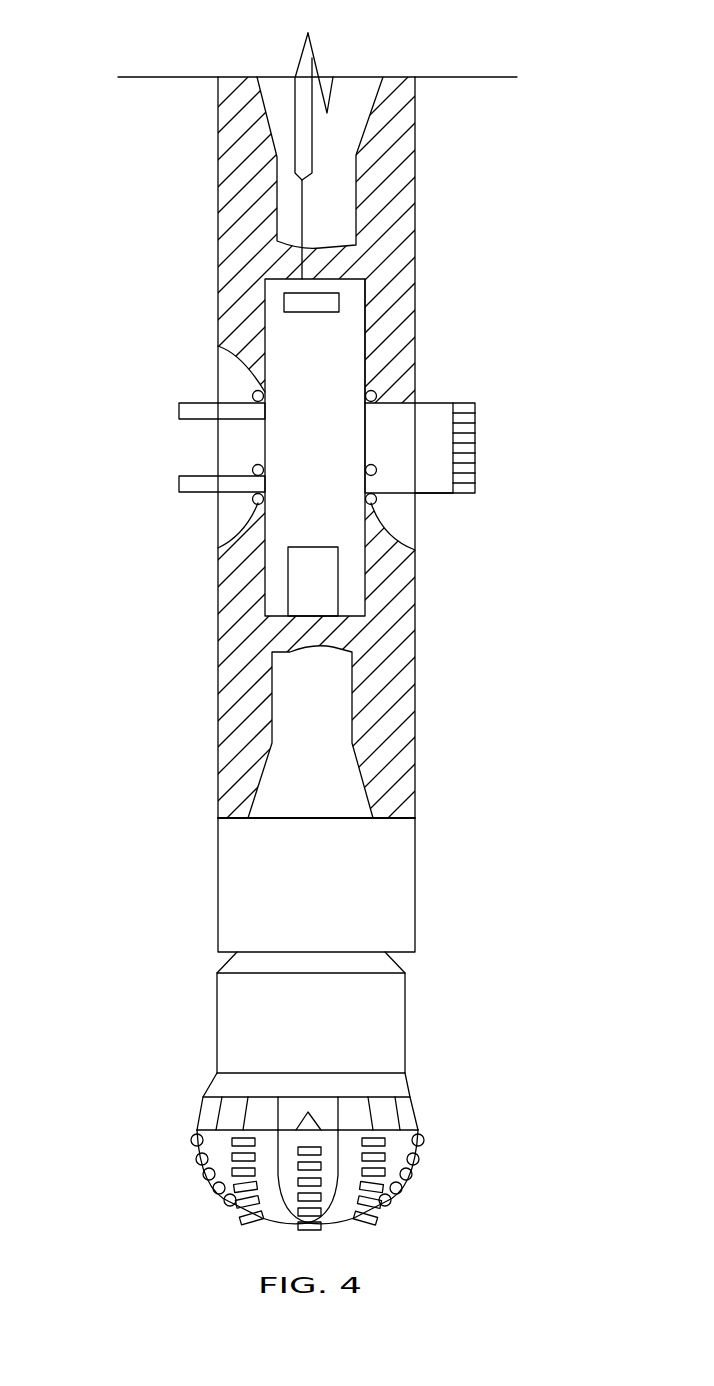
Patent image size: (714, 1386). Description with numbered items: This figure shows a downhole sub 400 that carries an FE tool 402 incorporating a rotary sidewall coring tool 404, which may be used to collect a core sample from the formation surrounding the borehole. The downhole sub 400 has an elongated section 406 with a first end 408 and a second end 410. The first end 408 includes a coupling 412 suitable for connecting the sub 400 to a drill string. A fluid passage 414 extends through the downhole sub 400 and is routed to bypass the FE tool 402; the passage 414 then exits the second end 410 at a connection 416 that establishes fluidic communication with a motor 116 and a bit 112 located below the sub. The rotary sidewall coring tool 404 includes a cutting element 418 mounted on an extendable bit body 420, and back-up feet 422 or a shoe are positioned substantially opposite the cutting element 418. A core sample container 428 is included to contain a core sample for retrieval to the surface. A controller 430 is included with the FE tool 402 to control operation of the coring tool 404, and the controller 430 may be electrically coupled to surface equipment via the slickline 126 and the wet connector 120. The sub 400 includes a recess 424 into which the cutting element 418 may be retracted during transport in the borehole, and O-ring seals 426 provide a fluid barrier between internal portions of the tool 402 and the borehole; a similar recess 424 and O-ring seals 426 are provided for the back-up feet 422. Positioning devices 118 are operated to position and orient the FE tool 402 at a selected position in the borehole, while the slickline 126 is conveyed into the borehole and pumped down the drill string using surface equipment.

The bit 112 is at (200, 1110).
The motor 116 is at (218, 882).
The positioning devices 118 is at (217, 1023).
The wet connector 120 is at (300, 178).
The slickline 126 is at (296, 97).
The downhole sub 400 is at (323, 409).
The FE tool 402 is at (265, 285).
The rotary sidewall coring tool 404 is at (365, 340).
The elongated section 406 is at (415, 207).
The first end 408 is at (393, 77).
The second end 410 is at (223, 815).
The coupling 412 is at (262, 105).
The fluid passage 414 is at (272, 678).
The connection 416 is at (362, 775).
The cutting element 418 is at (475, 437).
The extendable bit body 420 is at (433, 494).
The back-up feet 422 is at (179, 408).
The recess 424 is at (240, 357).
The O-ring seals 426 is at (253, 396).
The core sample container 428 is at (338, 582).
The controller 430 is at (339, 302).